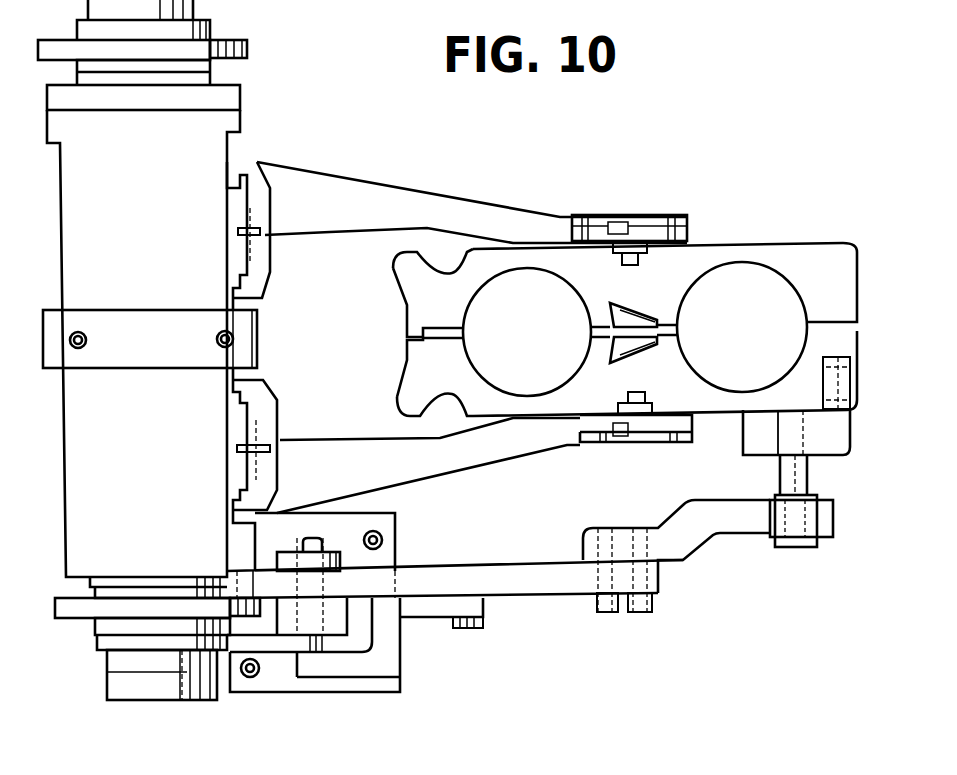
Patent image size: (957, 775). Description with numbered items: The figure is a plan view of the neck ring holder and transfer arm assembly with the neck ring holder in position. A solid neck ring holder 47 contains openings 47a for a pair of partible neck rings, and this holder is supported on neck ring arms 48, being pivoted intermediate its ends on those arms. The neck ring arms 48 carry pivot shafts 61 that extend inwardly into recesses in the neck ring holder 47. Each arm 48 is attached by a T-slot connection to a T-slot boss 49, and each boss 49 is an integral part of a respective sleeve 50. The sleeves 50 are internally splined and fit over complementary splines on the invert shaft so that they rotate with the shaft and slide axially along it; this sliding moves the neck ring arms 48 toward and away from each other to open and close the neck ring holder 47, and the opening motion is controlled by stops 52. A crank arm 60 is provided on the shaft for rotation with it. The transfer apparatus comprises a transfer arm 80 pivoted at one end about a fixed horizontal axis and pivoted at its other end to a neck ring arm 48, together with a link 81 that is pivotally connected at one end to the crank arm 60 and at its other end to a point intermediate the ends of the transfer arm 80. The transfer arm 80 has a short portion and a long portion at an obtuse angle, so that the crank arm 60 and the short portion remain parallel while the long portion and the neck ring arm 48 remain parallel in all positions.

The neck ring holder 47 is at (830, 248).
The openings 47a is at (735, 275).
The neck ring arms 48 is at (435, 207).
The T-slot bosses 49 is at (247, 205).
The sleeves 50 is at (167, 243).
The stops 52 is at (247, 50).
The crank arm 60 is at (163, 643).
The pivot shafts 61 is at (637, 266).
The transfer arm 80 is at (568, 580).
The link 81 is at (410, 645).